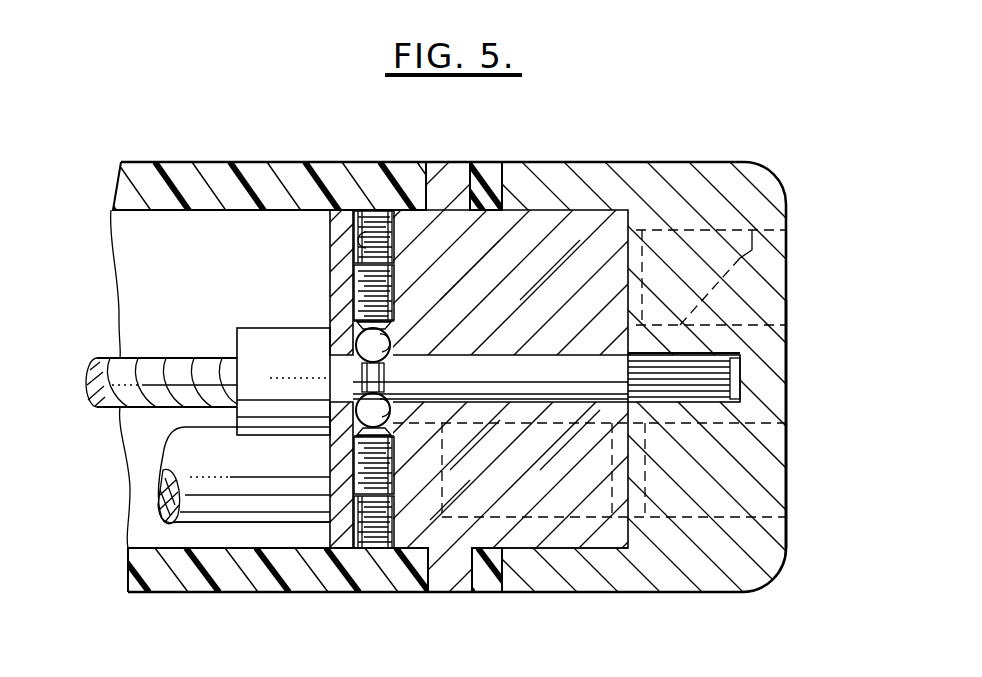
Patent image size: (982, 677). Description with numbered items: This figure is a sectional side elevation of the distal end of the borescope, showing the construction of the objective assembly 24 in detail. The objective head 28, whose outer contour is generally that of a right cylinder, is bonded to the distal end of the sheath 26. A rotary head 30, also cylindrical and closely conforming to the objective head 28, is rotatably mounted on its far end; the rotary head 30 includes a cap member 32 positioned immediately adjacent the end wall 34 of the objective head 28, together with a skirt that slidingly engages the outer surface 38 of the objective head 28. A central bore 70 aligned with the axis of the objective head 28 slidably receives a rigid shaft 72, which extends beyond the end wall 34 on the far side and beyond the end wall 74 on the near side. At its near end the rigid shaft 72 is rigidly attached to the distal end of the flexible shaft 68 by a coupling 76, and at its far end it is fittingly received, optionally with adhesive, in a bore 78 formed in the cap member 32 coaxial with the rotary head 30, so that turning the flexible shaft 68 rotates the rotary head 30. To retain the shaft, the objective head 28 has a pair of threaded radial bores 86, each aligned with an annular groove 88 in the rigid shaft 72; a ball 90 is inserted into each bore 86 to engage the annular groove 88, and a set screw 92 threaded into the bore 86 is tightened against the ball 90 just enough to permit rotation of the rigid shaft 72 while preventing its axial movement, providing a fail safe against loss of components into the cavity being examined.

The objective assembly 24 is at (722, 150).
The sheath 26 is at (247, 170).
The objective head 28 is at (568, 228).
The rotary head 30 is at (793, 447).
The cap member 32 is at (770, 258).
The end wall 34 is at (630, 488).
The outer surface 38 is at (557, 592).
The flexible shaft 68 is at (160, 358).
The central bore 70 is at (473, 347).
The rigid shaft 72 is at (540, 368).
The end wall 74 is at (330, 252).
The coupling 76 is at (255, 333).
The bore 78 is at (735, 366).
The threaded radial bore 86 is at (354, 229).
The annular groove 88 is at (375, 372).
The ball 90 is at (368, 412).
The set screw 92 is at (354, 283).